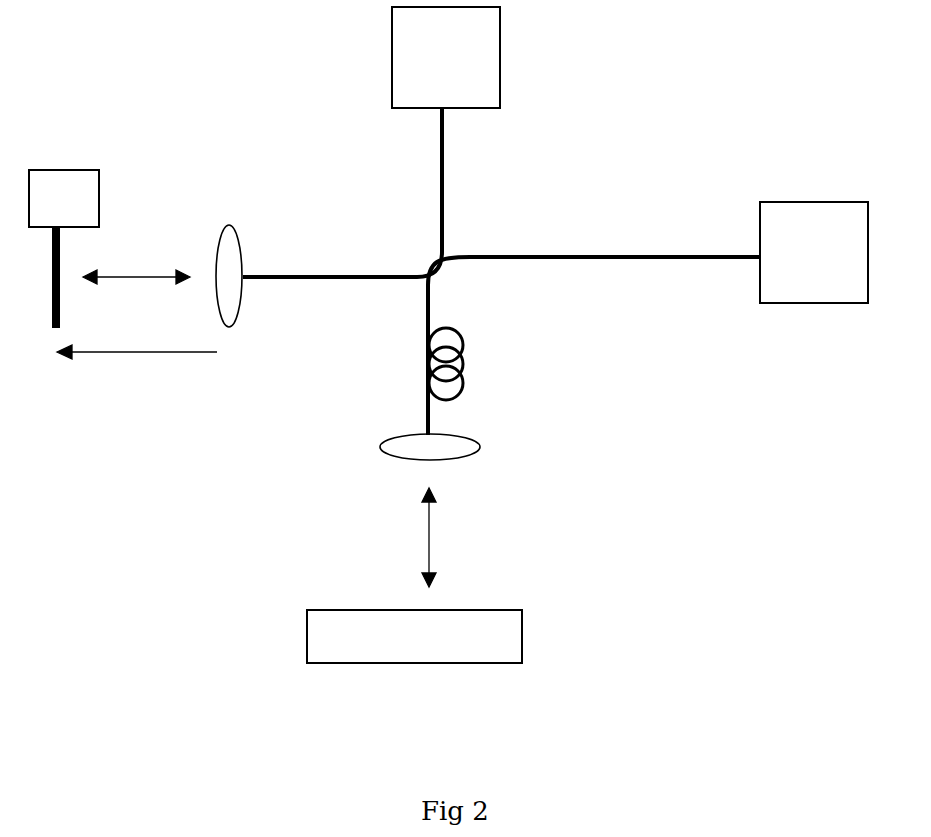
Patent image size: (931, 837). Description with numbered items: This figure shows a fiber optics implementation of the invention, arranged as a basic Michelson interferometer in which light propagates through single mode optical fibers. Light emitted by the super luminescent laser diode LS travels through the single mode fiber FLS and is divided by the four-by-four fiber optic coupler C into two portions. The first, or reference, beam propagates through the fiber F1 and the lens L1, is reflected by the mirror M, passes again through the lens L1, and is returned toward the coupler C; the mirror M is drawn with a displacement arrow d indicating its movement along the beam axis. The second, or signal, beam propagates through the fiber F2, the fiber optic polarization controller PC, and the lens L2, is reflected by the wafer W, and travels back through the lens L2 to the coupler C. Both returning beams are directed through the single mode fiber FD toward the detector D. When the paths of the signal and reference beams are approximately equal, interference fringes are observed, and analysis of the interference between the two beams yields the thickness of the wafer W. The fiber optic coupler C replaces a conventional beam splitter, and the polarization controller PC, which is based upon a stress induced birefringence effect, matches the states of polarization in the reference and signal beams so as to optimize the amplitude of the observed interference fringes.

The super luminescent laser diode LS is at (446, 57).
The single mode fiber FLS is at (461, 170).
The fiber optic coupler C is at (410, 293).
The fiber F1 is at (339, 260).
The lens L1 is at (229, 250).
The mirror M is at (64, 249).
The mirror displacement d is at (137, 376).
The single mode fiber FD is at (655, 273).
The detector D is at (814, 252).
The fiber F2 is at (446, 416).
The fiber optic polarization controller PC is at (482, 363).
The lens L2 is at (455, 449).
The wafer W is at (414, 636).